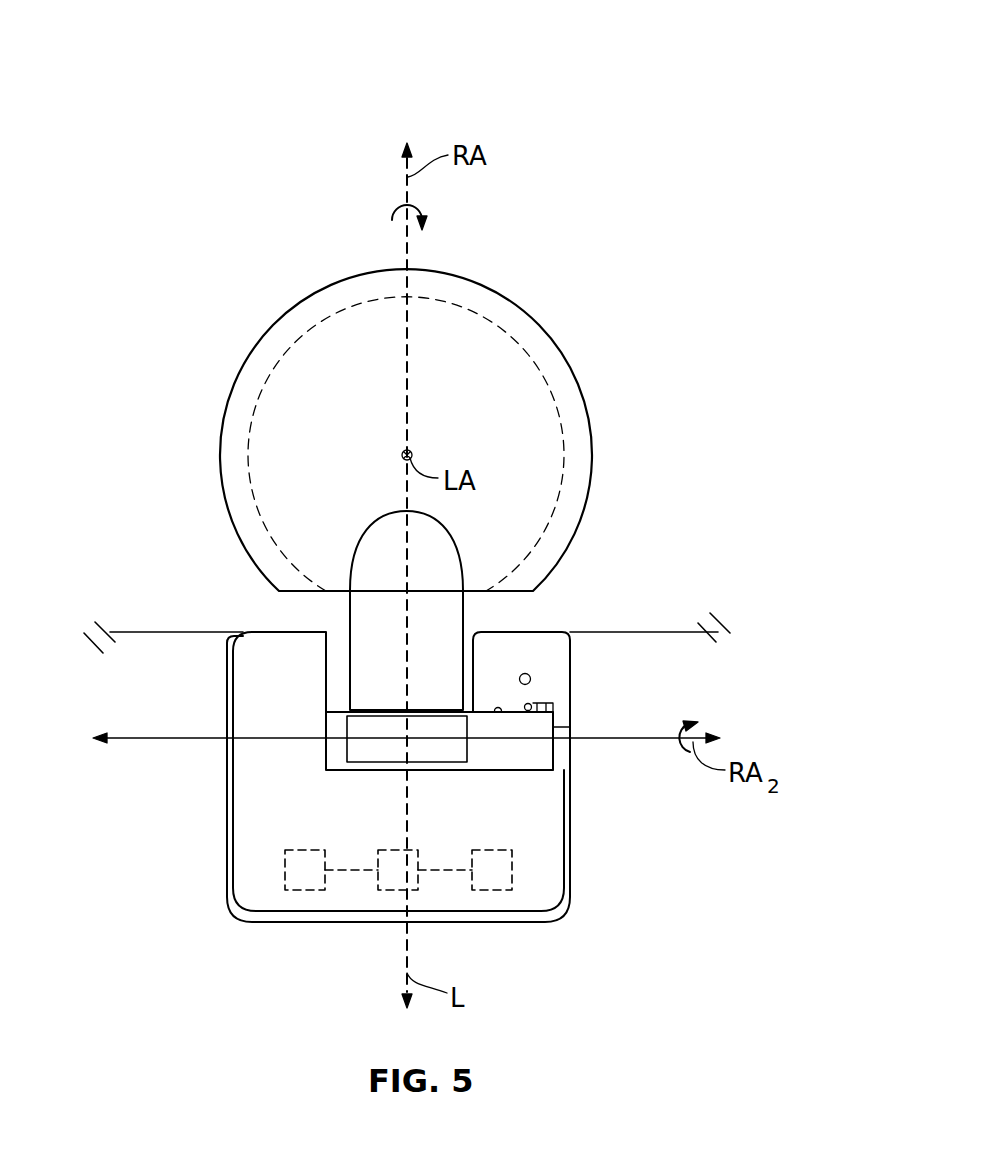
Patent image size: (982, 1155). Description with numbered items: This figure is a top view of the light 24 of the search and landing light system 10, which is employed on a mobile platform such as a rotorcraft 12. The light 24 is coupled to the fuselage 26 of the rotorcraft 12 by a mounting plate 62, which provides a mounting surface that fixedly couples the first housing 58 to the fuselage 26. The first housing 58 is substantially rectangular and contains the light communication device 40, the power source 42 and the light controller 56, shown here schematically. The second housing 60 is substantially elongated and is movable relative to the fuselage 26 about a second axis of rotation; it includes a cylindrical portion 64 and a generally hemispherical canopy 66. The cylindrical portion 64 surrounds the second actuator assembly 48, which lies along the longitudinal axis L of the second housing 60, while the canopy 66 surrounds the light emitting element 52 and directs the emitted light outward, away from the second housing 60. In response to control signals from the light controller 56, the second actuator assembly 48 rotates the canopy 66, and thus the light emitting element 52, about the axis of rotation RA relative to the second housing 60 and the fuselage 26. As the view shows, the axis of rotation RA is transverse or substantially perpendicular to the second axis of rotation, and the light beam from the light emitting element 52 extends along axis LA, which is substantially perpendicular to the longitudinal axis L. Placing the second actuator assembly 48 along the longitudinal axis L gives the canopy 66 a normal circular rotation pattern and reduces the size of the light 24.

The search and landing light system 10 is at (722, 58).
The rotorcraft 12 is at (580, 999).
The light 24 is at (626, 205).
The fuselage 26 is at (647, 632).
The light communication device 40 is at (493, 849).
The power source 42 is at (305, 848).
The second actuator assembly 48 is at (370, 660).
The light emitting element 52 is at (488, 318).
The light controller 56 is at (385, 848).
The first housing 58 is at (545, 875).
The second housing 60 is at (599, 389).
The mounting plate 62 is at (552, 650).
The cylindrical portion 64 is at (450, 627).
The canopy 66 is at (547, 348).